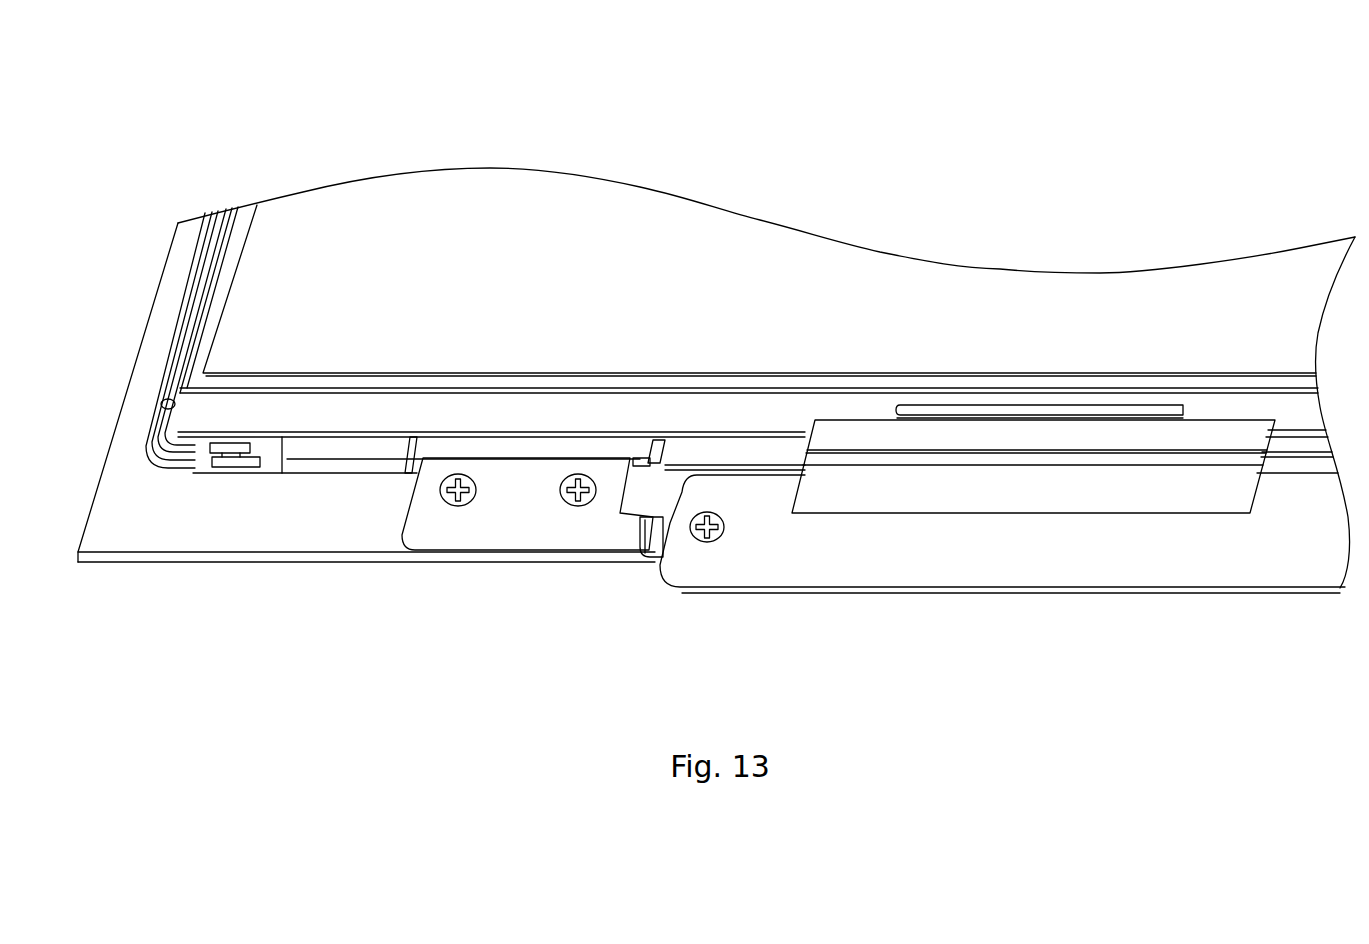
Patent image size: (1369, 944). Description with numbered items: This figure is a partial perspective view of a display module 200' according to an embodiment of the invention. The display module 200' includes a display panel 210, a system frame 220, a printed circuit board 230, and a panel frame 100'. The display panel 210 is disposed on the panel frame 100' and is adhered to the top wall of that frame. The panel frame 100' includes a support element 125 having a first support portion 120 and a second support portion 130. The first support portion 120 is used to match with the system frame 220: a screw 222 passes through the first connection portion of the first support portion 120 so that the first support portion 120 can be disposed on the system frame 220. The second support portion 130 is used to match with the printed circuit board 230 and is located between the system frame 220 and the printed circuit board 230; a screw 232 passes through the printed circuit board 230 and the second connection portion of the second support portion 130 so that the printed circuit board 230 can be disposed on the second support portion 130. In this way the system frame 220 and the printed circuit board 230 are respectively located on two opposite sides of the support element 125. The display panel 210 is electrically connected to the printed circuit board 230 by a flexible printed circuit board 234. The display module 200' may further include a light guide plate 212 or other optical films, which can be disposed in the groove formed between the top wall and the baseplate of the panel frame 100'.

The display module 200' is at (142, 298).
The display panel 210 is at (333, 222).
The light guide plate 212 is at (658, 440).
The system frame 220 is at (268, 527).
The screw 222 is at (562, 499).
The printed circuit board 230 is at (907, 537).
The screw 232 is at (718, 535).
The flexible printed circuit board 234 is at (1062, 485).
The panel frame 100' is at (148, 338).
The first support portion 120 is at (600, 533).
The second support portion 130 is at (680, 592).
The support element 125 is at (563, 585).